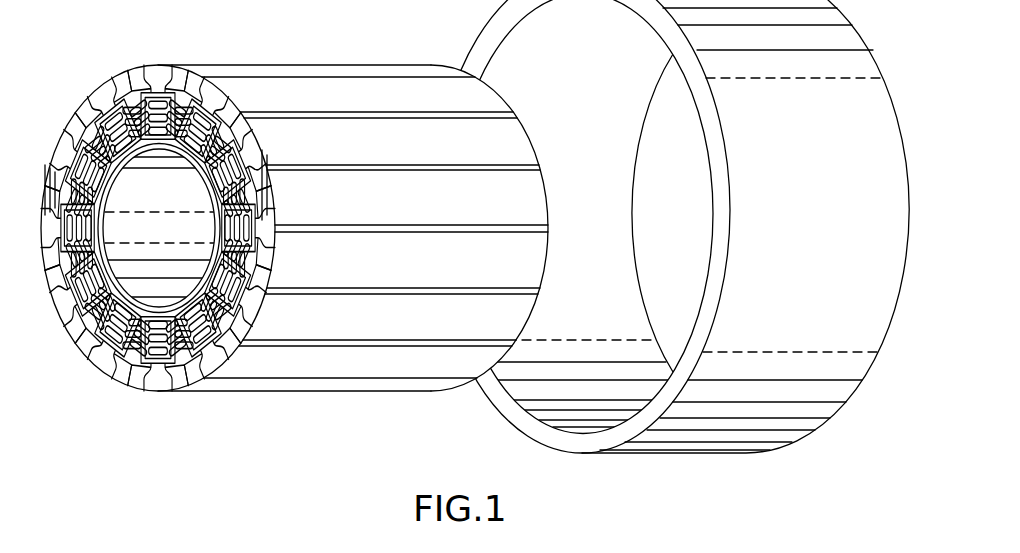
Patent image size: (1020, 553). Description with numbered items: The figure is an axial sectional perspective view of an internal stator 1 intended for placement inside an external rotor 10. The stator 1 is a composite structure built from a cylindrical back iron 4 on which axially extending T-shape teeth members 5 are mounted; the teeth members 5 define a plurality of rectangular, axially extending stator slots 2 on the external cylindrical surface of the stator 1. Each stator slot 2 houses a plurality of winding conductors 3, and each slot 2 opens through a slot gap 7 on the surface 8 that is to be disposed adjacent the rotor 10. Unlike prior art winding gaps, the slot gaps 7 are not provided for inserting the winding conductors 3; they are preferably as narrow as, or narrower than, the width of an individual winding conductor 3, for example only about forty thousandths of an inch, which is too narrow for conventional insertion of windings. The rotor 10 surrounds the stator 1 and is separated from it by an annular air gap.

The stator core 1 is at (267, 393).
The stator tooth / core segment 2 is at (160, 93).
The rotor bore 3 is at (137, 148).
The coil winding 4 is at (107, 362).
The end face slot openings 5 is at (485, 100).
The axial groove 7 is at (345, 112).
The outer peripheral surface 8 is at (333, 365).
The housing 10 is at (747, 433).